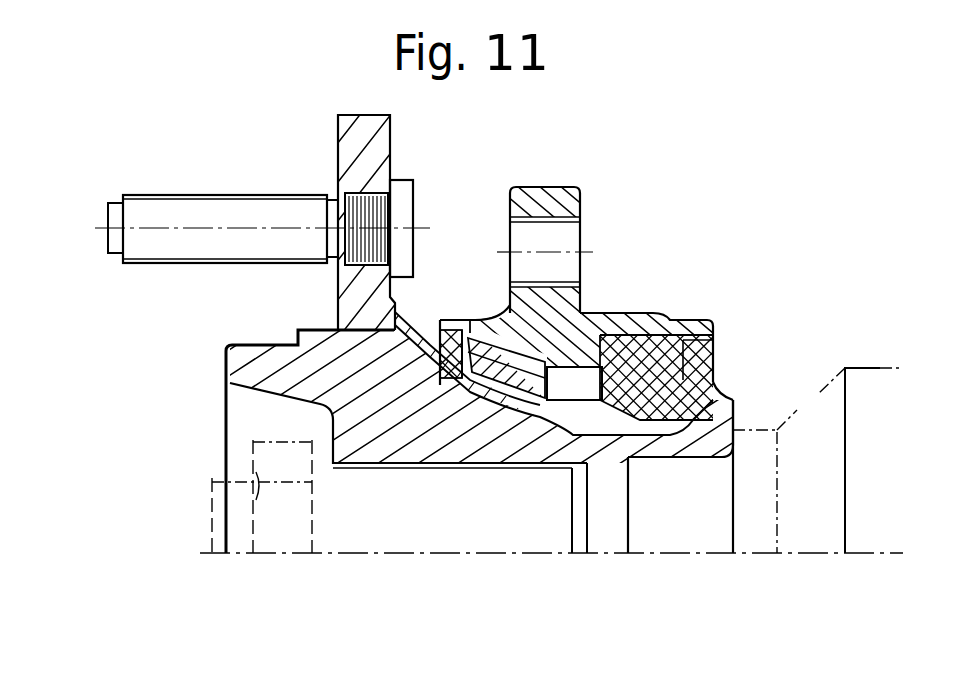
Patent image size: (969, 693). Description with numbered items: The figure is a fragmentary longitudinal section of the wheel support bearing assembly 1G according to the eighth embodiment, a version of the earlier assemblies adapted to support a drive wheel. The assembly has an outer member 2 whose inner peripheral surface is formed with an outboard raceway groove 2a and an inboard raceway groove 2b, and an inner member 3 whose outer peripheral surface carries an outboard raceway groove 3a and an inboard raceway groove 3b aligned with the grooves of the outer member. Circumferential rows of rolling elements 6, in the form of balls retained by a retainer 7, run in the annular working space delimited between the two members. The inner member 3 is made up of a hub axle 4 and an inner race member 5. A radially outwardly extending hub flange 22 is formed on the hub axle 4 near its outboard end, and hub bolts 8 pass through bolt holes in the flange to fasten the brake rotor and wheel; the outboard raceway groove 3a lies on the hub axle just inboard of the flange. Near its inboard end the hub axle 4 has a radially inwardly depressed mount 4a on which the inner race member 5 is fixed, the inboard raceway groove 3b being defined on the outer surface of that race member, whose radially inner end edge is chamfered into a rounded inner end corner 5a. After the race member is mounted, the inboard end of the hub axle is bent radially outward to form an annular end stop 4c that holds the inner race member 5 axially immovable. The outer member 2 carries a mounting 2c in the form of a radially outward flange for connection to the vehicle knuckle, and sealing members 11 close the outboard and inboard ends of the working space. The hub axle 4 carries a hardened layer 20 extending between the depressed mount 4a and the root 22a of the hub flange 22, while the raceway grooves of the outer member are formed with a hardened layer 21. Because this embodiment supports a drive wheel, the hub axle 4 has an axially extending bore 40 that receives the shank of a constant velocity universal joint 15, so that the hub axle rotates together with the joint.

The wheel support bearing assembly 1G is at (281, 106).
The outer member 2 is at (650, 320).
The outboard raceway groove 2a is at (478, 318).
The inboard raceway groove 2b is at (690, 322).
The mounting 2c is at (547, 187).
The inner member 3 is at (72, 455).
The outboard raceway groove 3a is at (317, 453).
The inboard raceway groove 3b is at (737, 383).
The hub axle 4 is at (330, 405).
The depressed mount 4a is at (735, 455).
The annular end stop 4c is at (717, 422).
The inner race member 5 is at (633, 457).
The rounded inner end corner 5a is at (713, 447).
The rolling elements 6 is at (500, 318).
The retainer 7 is at (320, 427).
The hub bolts 8 is at (195, 210).
The sealing members 11 is at (225, 353).
The constant velocity universal joint 15 is at (827, 523).
The hardened layer 20 is at (645, 405).
The hardened layer 21 is at (580, 320).
The hub flange 22 is at (352, 160).
The root of the hub flange 22a is at (337, 317).
The axially extending bore 40 is at (375, 530).